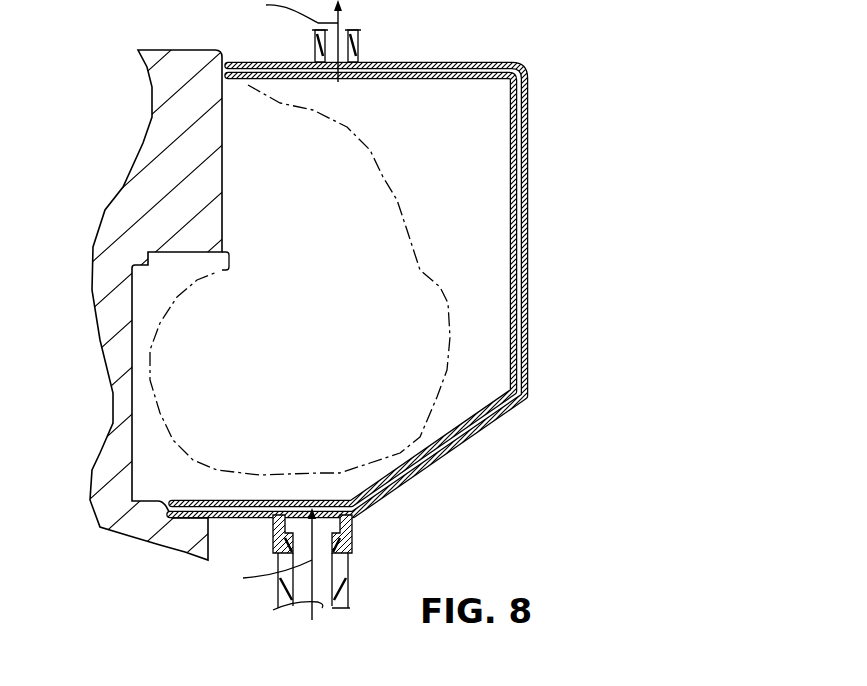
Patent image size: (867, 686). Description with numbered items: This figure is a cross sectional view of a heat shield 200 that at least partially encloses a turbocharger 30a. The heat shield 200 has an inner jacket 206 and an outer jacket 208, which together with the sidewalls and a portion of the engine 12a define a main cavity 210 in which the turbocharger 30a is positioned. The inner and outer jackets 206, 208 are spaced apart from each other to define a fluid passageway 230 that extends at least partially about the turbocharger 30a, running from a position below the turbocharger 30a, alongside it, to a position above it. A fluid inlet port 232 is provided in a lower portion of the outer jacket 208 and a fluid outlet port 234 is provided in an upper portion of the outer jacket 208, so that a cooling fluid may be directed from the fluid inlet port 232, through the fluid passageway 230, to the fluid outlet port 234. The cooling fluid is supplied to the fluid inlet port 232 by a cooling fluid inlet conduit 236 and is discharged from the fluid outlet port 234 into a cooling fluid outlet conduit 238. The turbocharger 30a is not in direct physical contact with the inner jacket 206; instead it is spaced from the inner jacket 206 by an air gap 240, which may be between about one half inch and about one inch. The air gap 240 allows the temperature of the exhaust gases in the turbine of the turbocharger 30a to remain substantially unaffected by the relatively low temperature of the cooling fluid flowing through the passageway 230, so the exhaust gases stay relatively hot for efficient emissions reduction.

The engine 12a is at (88, 290).
The turbocharger 30a is at (391, 154).
The heat shield 200 is at (392, 310).
The inner jacket 206 is at (516, 268).
The outer jacket 208 is at (528, 200).
The main cavity 210 is at (484, 298).
The fluid passageway 230 is at (519, 142).
The fluid inlet port 232 is at (340, 500).
The fluid outlet port 234 is at (326, 70).
The cooling fluid inlet conduit 236 is at (323, 573).
The cooling fluid outlet conduit 238 is at (352, 50).
The air gap 240 is at (456, 223).